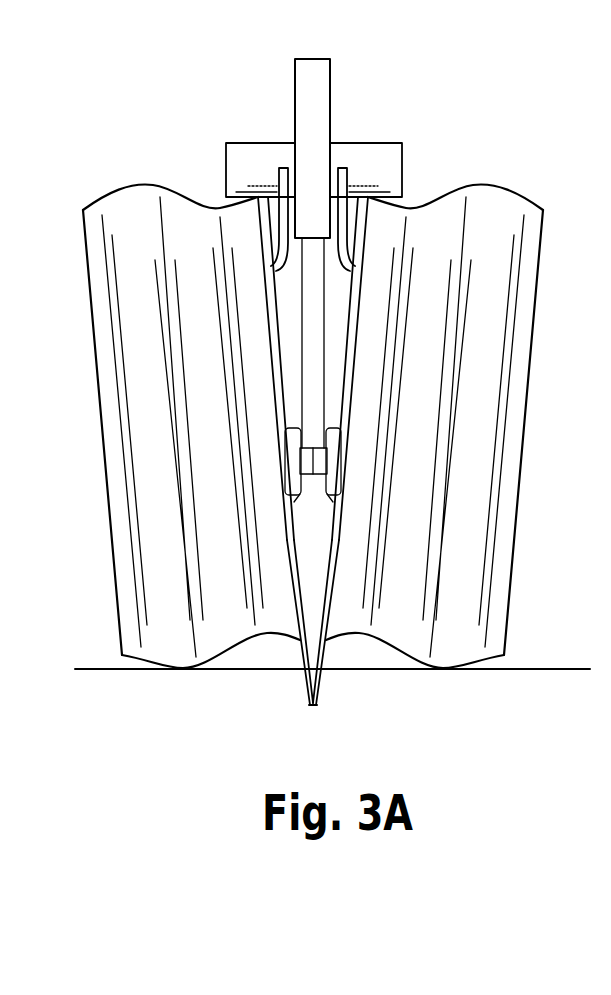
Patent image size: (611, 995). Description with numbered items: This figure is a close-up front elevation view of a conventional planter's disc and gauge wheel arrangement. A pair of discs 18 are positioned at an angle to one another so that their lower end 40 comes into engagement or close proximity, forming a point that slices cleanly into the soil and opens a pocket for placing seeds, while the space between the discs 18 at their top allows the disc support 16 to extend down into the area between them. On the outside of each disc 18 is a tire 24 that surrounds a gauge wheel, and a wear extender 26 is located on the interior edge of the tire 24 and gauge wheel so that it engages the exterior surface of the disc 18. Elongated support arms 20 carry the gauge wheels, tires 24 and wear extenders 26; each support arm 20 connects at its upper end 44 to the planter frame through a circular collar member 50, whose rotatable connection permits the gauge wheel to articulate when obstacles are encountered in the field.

The disc support 16 is at (312, 338).
The discs 18 is at (303, 670).
The support arms 20 is at (310, 170).
The tires 24 is at (174, 200).
The wear extenders 26 is at (297, 618).
The lower end 40 is at (314, 707).
The upper end 44 is at (288, 147).
The collar member 50 is at (226, 147).